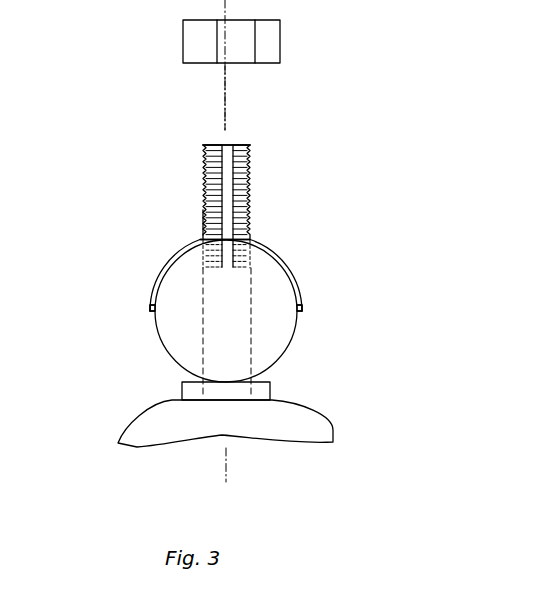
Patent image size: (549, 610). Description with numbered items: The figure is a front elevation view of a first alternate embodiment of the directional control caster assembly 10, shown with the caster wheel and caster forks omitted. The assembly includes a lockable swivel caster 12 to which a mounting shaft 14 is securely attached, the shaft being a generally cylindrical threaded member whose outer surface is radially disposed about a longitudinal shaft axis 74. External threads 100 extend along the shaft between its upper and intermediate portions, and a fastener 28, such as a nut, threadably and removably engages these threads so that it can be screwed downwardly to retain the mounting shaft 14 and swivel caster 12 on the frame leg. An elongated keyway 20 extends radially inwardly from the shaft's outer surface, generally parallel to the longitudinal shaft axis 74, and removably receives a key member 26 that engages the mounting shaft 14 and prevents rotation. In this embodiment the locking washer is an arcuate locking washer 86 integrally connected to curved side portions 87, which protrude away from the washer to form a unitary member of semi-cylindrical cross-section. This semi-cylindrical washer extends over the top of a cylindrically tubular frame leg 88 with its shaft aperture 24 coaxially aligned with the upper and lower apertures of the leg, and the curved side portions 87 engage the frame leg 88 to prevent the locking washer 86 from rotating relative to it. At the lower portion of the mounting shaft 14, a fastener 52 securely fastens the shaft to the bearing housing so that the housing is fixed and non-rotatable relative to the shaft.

The directional control caster assembly 10 is at (320, 208).
The lockable swivel caster 12 is at (314, 422).
The mounting shaft 14 is at (252, 168).
The elongated keyway 20 is at (205, 164).
The shaft aperture 24 is at (252, 242).
The key member 26 is at (205, 220).
The fastener 28 is at (283, 38).
The fastener 52 is at (290, 390).
The longitudinal shaft axis 74 is at (228, 100).
The arcuate locking washer 86 is at (170, 258).
The curved side portions 87 is at (150, 300).
The cylindrically tubular frame leg 88 is at (296, 335).
The external threads 100 is at (205, 151).